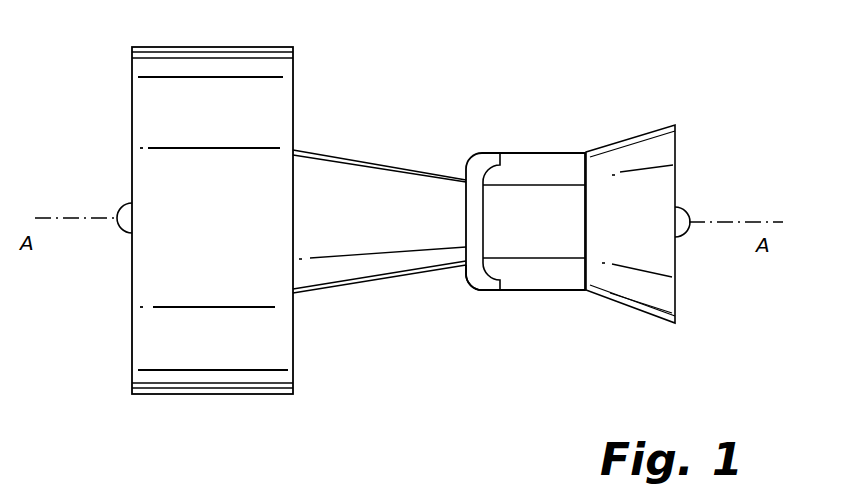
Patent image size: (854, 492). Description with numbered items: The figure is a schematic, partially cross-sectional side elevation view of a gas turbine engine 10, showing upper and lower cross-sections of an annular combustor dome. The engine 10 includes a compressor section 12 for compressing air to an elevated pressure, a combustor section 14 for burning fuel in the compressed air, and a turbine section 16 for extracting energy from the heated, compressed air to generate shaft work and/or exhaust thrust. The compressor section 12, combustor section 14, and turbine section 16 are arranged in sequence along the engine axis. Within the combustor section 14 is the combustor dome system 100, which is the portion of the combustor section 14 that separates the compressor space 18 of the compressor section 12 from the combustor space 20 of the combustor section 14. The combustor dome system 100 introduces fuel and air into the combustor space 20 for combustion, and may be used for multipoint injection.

The gas turbine engine 10 is at (555, 128).
The compressor section 12 is at (315, 152).
The combustor section 14 is at (510, 153).
The turbine section 16 is at (652, 132).
The compressor space 18 is at (443, 190).
The combustor space 20 is at (543, 280).
The combustor dome system 100 is at (458, 290).